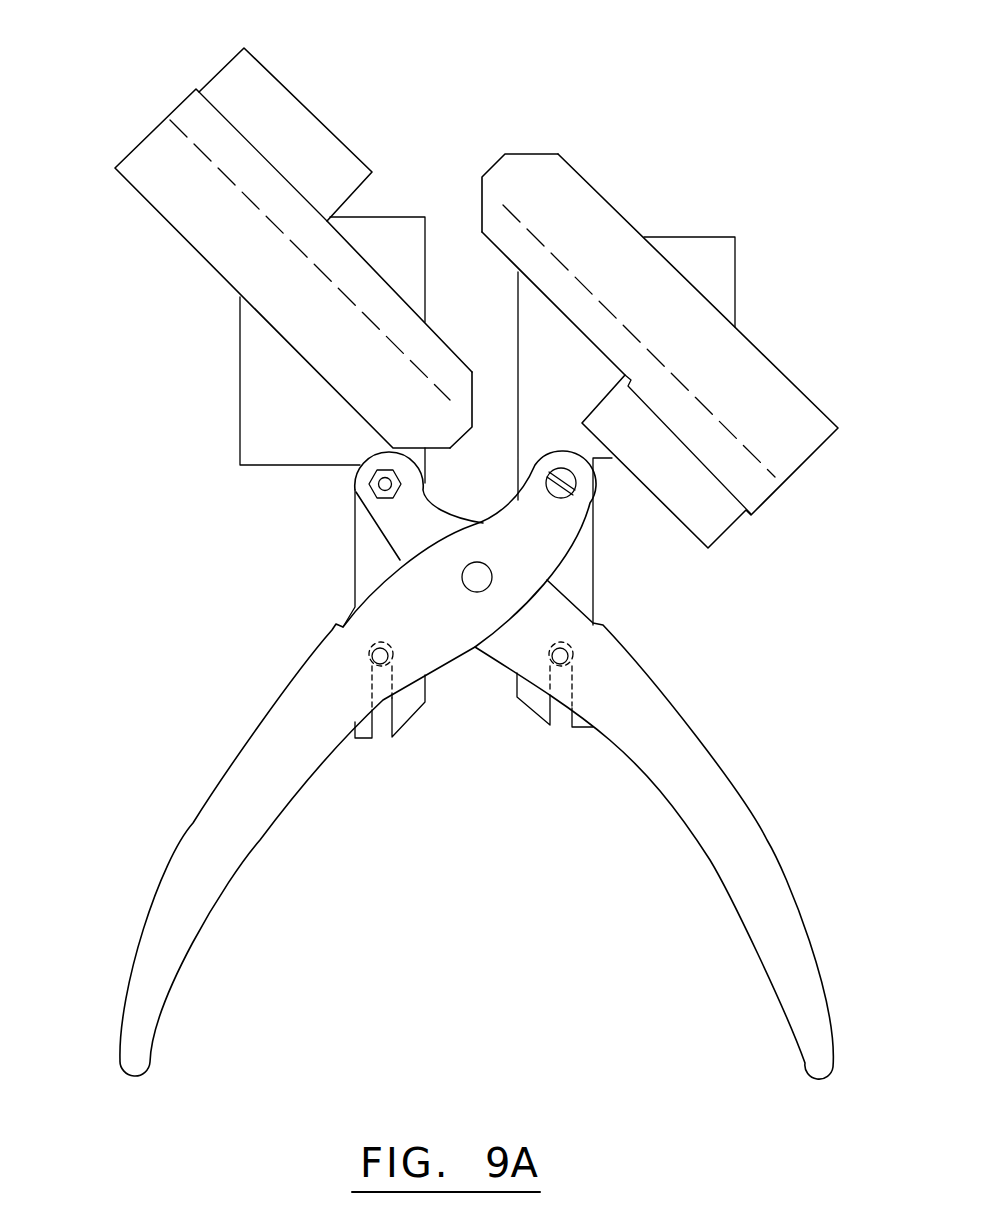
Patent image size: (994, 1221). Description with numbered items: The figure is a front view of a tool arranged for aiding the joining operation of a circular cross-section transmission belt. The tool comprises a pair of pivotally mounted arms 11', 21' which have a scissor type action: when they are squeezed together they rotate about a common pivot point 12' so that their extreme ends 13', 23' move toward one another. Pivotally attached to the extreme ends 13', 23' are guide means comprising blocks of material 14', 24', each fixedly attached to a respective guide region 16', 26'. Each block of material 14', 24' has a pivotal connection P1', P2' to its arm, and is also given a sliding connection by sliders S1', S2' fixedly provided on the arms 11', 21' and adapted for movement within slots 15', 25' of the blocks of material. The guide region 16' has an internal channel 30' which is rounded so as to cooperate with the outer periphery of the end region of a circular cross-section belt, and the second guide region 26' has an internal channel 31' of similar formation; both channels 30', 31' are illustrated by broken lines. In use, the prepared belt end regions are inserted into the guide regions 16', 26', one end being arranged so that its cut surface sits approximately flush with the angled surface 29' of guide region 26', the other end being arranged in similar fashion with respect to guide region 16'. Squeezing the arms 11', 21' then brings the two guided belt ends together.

The arm 11' is at (315, 763).
The arm 21' is at (629, 765).
The common pivot point 12' is at (483, 704).
The extreme end 13' is at (635, 465).
The block of material 14' is at (760, 242).
The slot 15' is at (565, 759).
The guide region 16' is at (696, 351).
The extreme end 23' is at (266, 554).
The block of material 24' is at (262, 350).
The slot 25' is at (387, 760).
The guide region 26' is at (258, 248).
The angled surface 29' is at (473, 362).
The internal channel 30' is at (478, 157).
The internal channel 31' is at (280, 200).
The pivotal connection P1' is at (654, 540).
The pivotal connection P2' is at (284, 539).
The slider S1' is at (248, 675).
The slider S2' is at (687, 692).